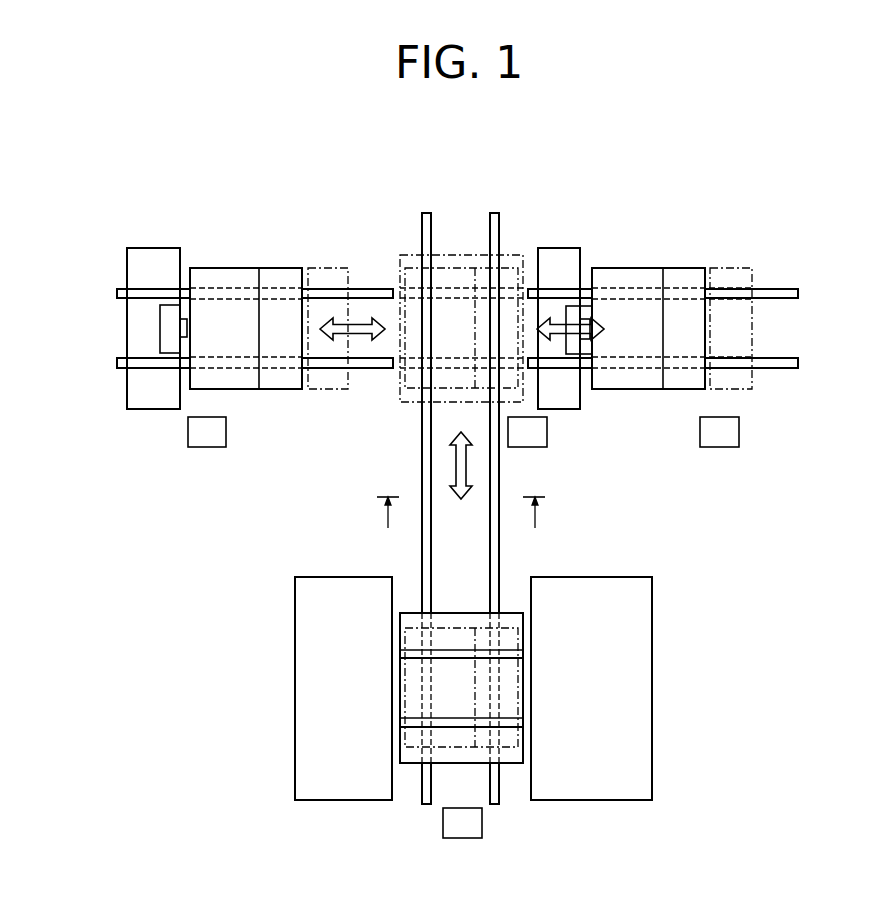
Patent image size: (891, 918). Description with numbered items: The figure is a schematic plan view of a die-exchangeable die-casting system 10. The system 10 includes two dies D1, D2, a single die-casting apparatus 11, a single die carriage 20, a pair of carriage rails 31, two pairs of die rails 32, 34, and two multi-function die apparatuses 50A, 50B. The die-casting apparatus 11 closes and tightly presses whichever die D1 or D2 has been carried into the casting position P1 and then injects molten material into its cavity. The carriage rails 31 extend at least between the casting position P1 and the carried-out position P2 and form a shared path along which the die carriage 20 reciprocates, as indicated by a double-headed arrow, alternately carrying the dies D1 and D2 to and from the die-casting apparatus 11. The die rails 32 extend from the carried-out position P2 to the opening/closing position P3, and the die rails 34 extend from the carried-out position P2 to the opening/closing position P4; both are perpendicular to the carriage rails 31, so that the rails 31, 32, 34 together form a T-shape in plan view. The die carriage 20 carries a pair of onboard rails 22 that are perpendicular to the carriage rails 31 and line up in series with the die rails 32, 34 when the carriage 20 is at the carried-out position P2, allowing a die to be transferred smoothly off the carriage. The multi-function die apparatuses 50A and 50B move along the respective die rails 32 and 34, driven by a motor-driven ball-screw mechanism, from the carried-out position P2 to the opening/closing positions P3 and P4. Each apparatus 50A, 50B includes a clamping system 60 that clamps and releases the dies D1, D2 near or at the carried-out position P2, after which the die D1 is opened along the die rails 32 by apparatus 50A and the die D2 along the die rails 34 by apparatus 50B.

The die-casting system 10 is at (396, 224).
The die-casting apparatus 11 is at (547, 800).
The die carriage 20 is at (399, 402).
The onboard rails 22 is at (400, 723).
The carriage rails 31 is at (494, 213).
The die rails 32 is at (117, 293).
The die rails 34 is at (798, 293).
The multi-function die apparatus 50A is at (157, 248).
The multi-function die apparatus 50B is at (565, 248).
The clamping system 60 is at (210, 340).
The die D1 is at (273, 268).
The die D2 is at (683, 268).
The casting position P1 is at (462, 823).
The carried-out position P2 is at (527, 432).
The opening/closing position P3 is at (207, 432).
The opening/closing position P4 is at (719, 432).